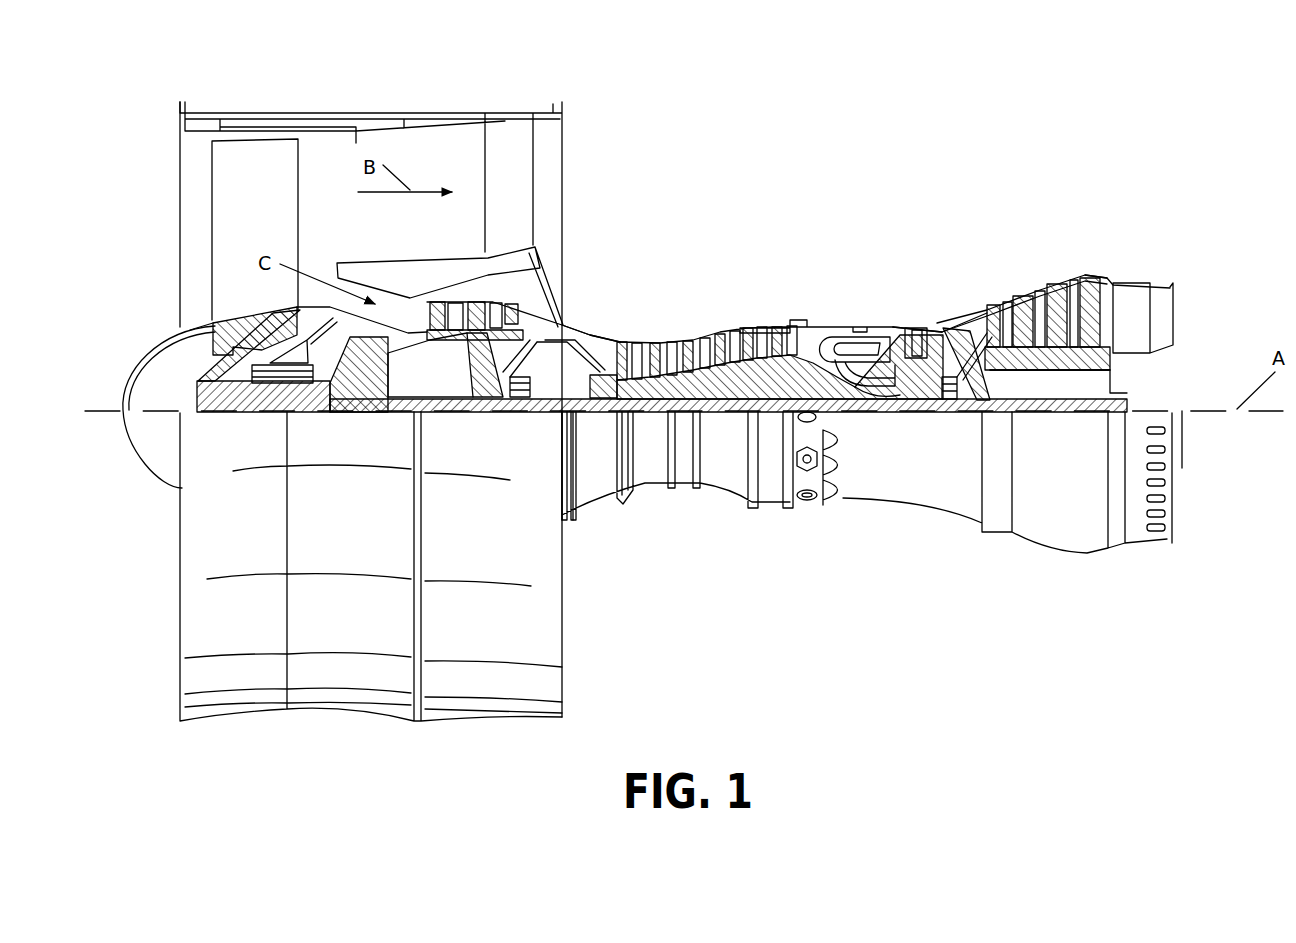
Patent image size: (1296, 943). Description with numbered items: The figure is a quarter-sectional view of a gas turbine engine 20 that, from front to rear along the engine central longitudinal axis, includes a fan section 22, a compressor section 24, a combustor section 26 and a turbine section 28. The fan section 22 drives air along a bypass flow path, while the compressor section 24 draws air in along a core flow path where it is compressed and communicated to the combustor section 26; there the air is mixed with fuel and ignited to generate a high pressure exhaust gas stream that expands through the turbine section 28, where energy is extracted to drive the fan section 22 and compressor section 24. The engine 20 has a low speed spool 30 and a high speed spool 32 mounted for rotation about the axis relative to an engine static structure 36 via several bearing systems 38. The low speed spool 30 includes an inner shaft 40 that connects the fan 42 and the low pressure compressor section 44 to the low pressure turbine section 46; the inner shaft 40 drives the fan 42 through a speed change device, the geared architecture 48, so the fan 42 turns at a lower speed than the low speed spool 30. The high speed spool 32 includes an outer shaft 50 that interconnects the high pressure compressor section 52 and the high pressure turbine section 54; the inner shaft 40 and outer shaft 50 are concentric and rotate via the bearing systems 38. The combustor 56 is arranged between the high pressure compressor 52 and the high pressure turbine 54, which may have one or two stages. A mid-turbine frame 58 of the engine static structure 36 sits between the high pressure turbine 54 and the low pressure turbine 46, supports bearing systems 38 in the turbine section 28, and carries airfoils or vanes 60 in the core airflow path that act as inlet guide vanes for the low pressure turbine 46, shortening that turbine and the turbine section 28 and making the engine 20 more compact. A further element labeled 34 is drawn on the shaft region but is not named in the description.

The gas turbine engine 20 is at (930, 128).
The fan section 22 is at (404, 80).
The compressor section 24 is at (818, 222).
The combustor section 26 is at (895, 222).
The turbine section 28 is at (1122, 222).
The low speed spool 30 is at (730, 420).
The high speed spool 32 is at (768, 370).
The outer shaft 34 is at (1050, 385).
The engine static structure 36 is at (767, 510).
The bearing systems 38 is at (258, 400).
The inner shaft 40 is at (578, 415).
The fan 42 is at (260, 240).
The low pressure compressor section 44 is at (495, 308).
The low pressure turbine section 46 is at (1053, 280).
The geared architecture 48 is at (369, 387).
The outer shaft 50 is at (850, 390).
The high pressure compressor section 52 is at (692, 330).
The high pressure turbine section 54 is at (908, 315).
The combustor 56 is at (840, 347).
The mid-turbine frame 58 is at (963, 300).
The airfoils/vanes 60 is at (955, 337).